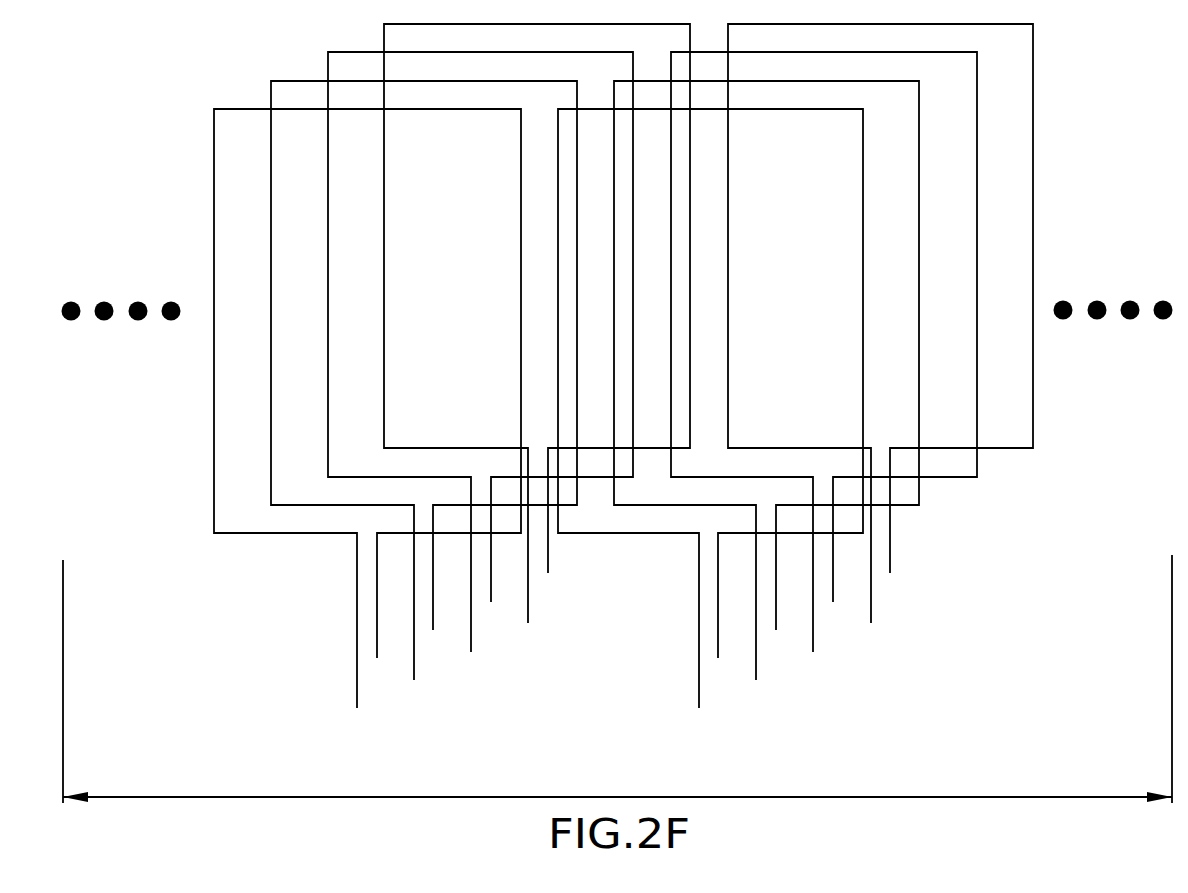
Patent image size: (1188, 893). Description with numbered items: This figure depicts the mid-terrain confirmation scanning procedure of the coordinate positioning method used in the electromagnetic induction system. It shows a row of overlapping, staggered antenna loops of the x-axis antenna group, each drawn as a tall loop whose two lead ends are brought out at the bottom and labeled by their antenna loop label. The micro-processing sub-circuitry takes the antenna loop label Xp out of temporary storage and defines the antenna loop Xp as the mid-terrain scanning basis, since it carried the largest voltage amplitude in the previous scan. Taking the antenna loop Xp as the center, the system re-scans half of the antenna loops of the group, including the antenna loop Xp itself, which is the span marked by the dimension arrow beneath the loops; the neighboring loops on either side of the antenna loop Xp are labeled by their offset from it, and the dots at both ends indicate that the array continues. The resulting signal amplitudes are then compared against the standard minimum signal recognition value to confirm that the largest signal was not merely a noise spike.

The antenna loop Xp is at (537, 339).